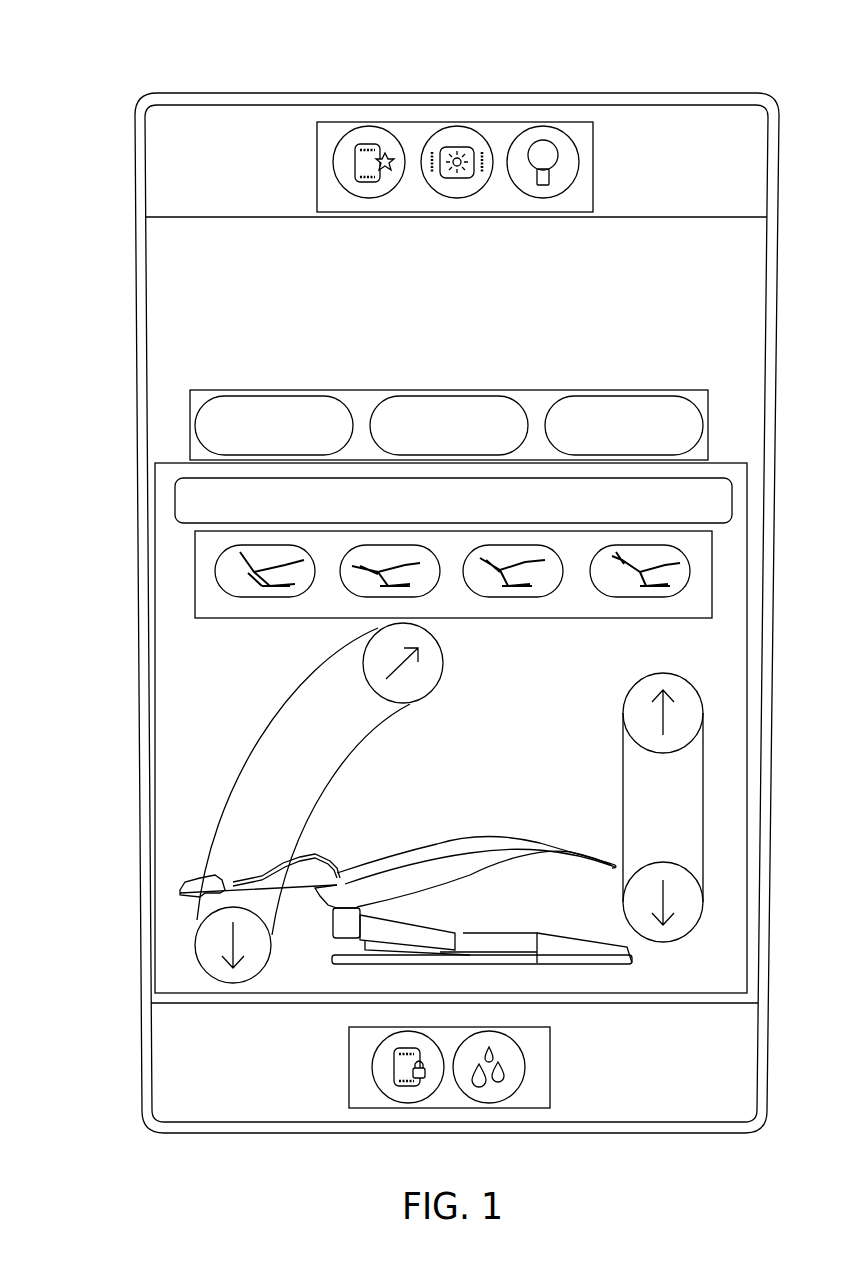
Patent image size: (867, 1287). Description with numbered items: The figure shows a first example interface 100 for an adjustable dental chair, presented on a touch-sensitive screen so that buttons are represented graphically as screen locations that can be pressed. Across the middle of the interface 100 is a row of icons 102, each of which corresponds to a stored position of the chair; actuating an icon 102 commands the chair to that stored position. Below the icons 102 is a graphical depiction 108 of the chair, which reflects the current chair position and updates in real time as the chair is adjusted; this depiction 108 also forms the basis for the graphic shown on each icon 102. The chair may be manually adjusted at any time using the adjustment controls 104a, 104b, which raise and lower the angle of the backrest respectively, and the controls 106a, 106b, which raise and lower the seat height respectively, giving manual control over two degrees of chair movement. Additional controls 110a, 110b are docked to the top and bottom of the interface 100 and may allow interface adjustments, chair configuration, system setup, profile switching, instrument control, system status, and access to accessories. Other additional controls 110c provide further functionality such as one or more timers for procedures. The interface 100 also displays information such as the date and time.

The interface 100 is at (118, 94).
The icons 102 is at (195, 572).
The adjustment control 104a is at (377, 670).
The adjustment control 104b is at (205, 940).
The control 106a is at (640, 717).
The control 106b is at (648, 880).
The graphical depiction 108 is at (400, 828).
The additional control 110a is at (315, 165).
The additional control 110b is at (348, 1072).
The additional control 110c is at (190, 433).